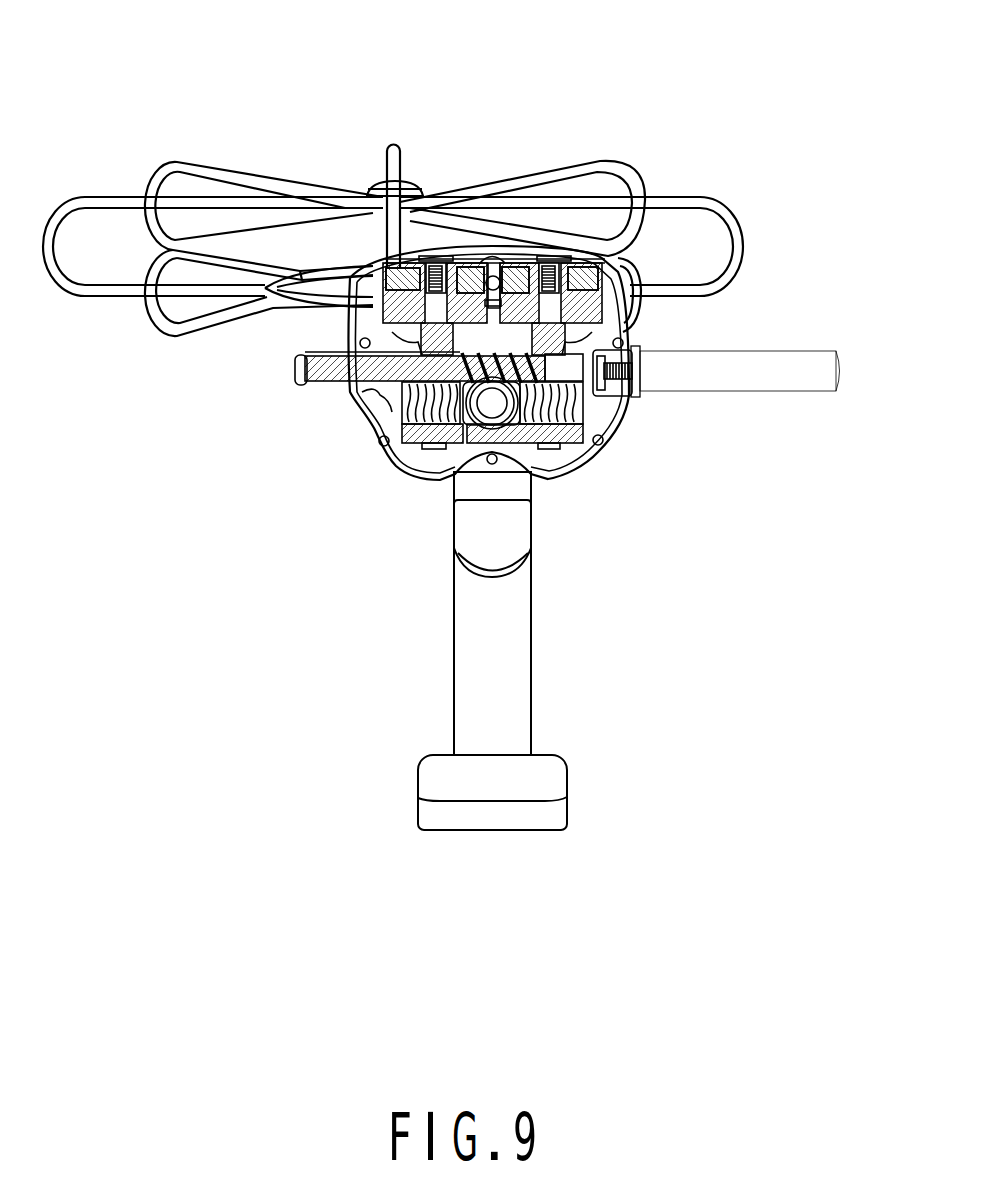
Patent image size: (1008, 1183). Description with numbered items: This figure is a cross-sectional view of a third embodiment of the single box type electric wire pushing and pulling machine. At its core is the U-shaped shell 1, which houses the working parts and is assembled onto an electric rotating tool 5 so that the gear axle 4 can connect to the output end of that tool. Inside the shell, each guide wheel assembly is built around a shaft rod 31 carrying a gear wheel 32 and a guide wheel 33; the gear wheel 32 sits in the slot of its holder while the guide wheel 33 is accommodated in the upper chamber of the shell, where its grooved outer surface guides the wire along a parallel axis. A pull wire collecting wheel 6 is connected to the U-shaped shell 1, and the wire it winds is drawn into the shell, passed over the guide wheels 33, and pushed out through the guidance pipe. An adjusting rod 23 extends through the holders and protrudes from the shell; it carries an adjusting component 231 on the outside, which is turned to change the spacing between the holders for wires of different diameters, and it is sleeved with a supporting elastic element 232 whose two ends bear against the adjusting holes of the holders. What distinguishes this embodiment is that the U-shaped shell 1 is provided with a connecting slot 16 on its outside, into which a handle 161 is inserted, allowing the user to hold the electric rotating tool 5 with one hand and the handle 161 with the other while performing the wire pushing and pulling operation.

The U-shaped shell 1 is at (610, 443).
The gear axle 4 is at (445, 478).
The electric rotating tool 5 is at (513, 664).
The pull wire collecting wheel 6 is at (522, 177).
The connecting slot 16 is at (617, 402).
The handle 161 is at (765, 370).
The adjusting rod 23 is at (343, 388).
The adjusting component 231 is at (310, 385).
The supporting elastic element 232 is at (515, 352).
The shaft rod 31 is at (412, 258).
The gear wheel 32 is at (388, 464).
The guide wheel 33 is at (468, 262).